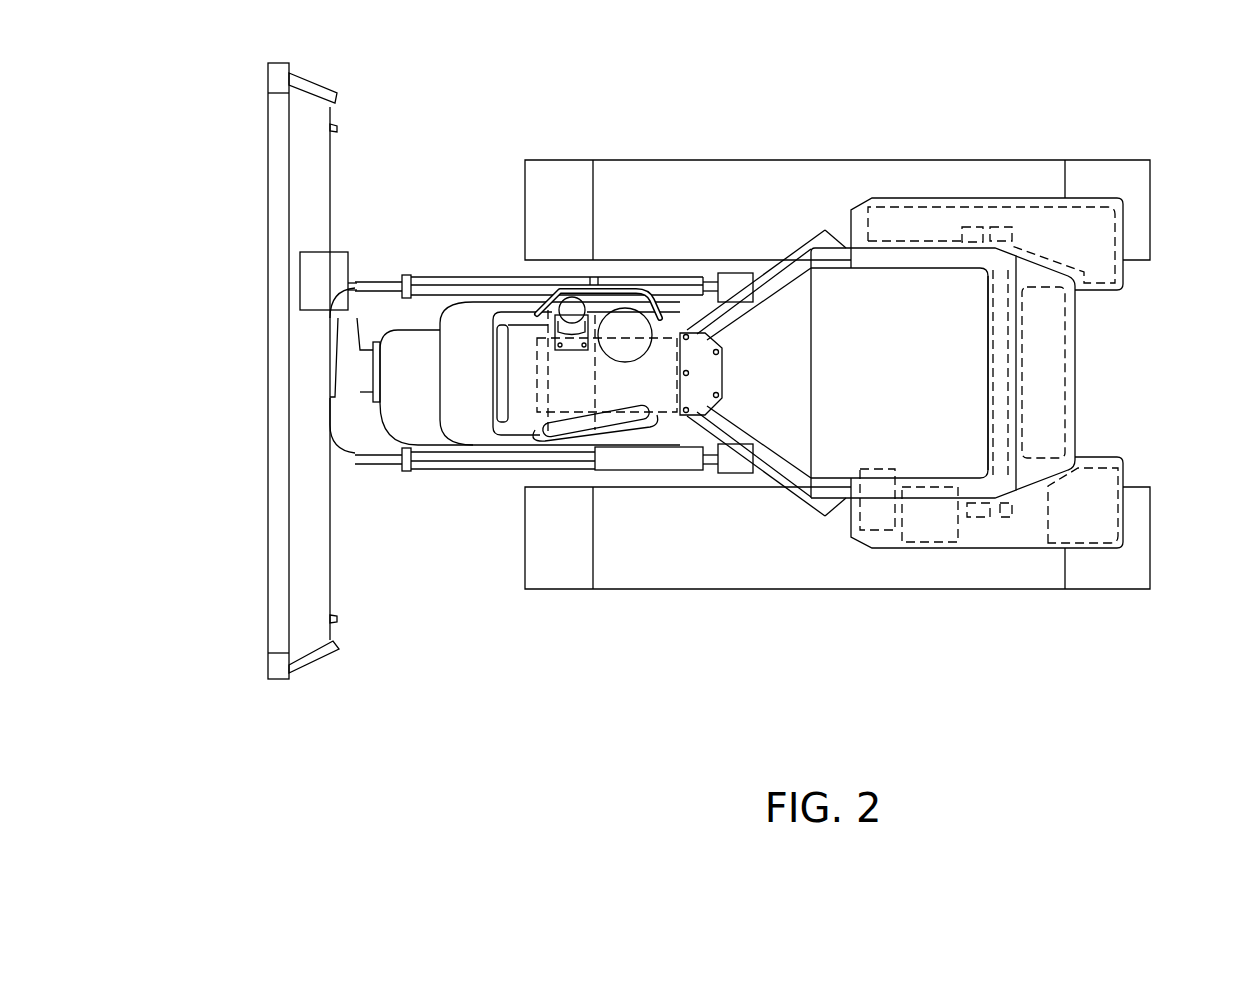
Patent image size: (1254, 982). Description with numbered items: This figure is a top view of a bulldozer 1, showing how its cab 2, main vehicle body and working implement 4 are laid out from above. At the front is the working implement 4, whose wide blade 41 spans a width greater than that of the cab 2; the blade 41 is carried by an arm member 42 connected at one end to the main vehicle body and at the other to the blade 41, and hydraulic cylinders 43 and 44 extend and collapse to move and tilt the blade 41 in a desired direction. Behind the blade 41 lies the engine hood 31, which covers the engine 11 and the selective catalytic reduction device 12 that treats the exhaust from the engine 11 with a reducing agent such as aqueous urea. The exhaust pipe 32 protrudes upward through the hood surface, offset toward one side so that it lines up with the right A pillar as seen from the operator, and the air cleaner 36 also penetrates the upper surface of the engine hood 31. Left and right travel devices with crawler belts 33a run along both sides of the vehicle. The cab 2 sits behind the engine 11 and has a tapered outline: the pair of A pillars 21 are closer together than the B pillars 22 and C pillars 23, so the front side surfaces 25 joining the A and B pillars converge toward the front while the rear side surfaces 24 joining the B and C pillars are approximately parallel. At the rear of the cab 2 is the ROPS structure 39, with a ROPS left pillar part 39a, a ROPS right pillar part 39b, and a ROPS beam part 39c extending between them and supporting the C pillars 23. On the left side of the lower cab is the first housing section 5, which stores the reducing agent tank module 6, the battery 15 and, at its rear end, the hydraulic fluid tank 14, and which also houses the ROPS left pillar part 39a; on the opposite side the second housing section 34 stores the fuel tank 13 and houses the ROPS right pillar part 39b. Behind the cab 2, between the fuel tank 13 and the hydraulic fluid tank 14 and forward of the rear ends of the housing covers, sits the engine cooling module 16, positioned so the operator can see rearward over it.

The bulldozer 1 is at (652, 118).
The cab 2 is at (793, 232).
The working implement 4 is at (392, 203).
The first housing section 5 is at (1122, 543).
The reducing agent tank module 6 is at (877, 532).
The engine 11 is at (643, 450).
The selective catalytic reduction device 12 is at (575, 430).
The fuel tank 13 is at (1087, 200).
The hydraulic fluid tank 14 is at (1123, 497).
The battery 15 is at (922, 542).
The engine cooling module 16 is at (1072, 350).
The A pillars 21 is at (683, 318).
The B pillars 22 is at (832, 238).
The C pillars 23 is at (1005, 237).
The rear side surfaces 24 is at (917, 238).
The front side surfaces 25 is at (757, 275).
The engine hood 31 is at (522, 387).
The exhaust pipe 32 is at (577, 298).
The crawler belt 33a is at (722, 207).
The second housing section 34 is at (1123, 286).
The air cleaner 36 is at (567, 305).
The ROPS structure 39 is at (1020, 387).
The ROPS left pillar part 39a is at (978, 518).
The ROPS right pillar part 39b is at (982, 227).
The ROPS beam part 39c is at (1010, 432).
The blade 41 is at (287, 420).
The arm member 42 is at (407, 400).
The hydraulic cylinder 43 is at (423, 280).
The hydraulic cylinder 44 is at (617, 320).